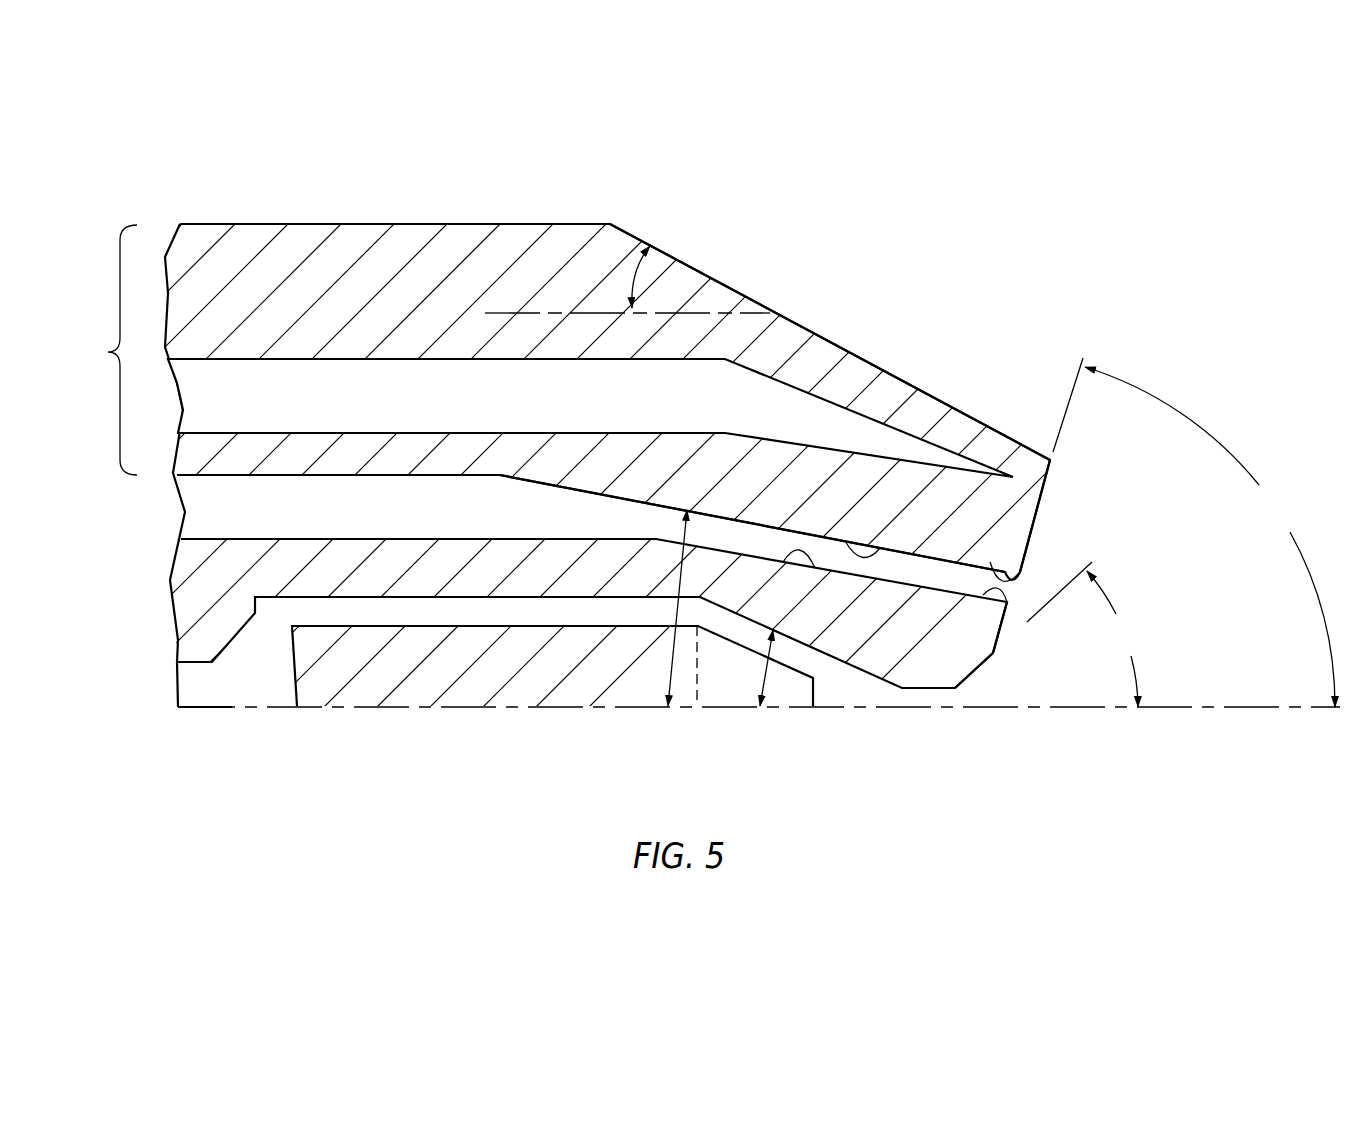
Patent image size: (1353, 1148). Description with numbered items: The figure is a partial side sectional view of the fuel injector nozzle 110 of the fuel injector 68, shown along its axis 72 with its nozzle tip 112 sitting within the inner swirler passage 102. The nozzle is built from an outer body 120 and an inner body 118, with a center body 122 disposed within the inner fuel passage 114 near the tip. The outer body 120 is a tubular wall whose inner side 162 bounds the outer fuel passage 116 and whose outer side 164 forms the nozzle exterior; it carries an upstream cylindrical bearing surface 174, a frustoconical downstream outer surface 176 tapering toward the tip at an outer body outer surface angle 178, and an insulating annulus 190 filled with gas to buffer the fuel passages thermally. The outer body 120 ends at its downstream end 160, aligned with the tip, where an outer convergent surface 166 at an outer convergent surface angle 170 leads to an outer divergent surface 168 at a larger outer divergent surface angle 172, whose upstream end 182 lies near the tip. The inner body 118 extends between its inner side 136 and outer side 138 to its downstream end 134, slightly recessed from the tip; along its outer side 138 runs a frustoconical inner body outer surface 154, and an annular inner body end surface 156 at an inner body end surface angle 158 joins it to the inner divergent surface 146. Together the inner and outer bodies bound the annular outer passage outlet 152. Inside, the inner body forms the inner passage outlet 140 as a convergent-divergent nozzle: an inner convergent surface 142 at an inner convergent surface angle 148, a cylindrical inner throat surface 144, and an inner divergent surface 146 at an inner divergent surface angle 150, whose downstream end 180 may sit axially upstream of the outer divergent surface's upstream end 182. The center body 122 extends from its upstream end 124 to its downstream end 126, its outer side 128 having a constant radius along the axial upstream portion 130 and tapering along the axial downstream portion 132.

The fuel injector 68 is at (676, 424).
The fuel injector nozzle 110 is at (895, 247).
The bearing surface 174 is at (358, 224).
The outer side of the outer body 164 is at (440, 222).
The outer body outer surface angle 178 is at (632, 308).
The downstream outer surface 176 is at (810, 331).
The outer body 120 is at (96, 350).
The insulating annulus 190 is at (396, 401).
The inner swirler passage 102 is at (676, 424).
The nozzle tip 112 is at (1112, 516).
The outer body downstream end 160 is at (1057, 461).
The inner body end surface angle 158 is at (1194, 532).
The outer divergent surface angle 172 is at (1194, 532).
The outer passage outlet 152 is at (1053, 542).
The outer divergent surface 168 is at (1025, 558).
The upstream end of the outer divergent surface 182 is at (990, 562).
The outer convergent surface 166 is at (845, 541).
The inner side of the outer body 162 is at (418, 483).
The outer side of the inner body 138 is at (238, 531).
The outer fuel passage 116 is at (206, 503).
The inner body 118 is at (182, 578).
The inner fuel passage 114 is at (204, 684).
The outer convergent surface angle 170 is at (668, 610).
The inner body outer surface 154 is at (815, 568).
The inner body downstream end 134 is at (983, 595).
The inner body end surface 156 is at (1008, 625).
The inner divergent surface angle 150 is at (1085, 634).
The inner side of the inner body 136 is at (273, 604).
The outer side of the center body 128 is at (343, 625).
The axial upstream portion of the center body 130 is at (546, 680).
The axial downstream portion of the center body 132 is at (751, 682).
The upstream end of the center body 124 is at (297, 706).
The center body 122 is at (384, 708).
The inner convergent surface angle 148 is at (773, 665).
The downstream end of the center body 126 is at (837, 707).
The inner convergent surface 142 is at (867, 677).
The inner throat surface 144 is at (930, 690).
The inner divergent surface 146 is at (972, 673).
The downstream end of the inner divergent surface 180 is at (998, 657).
The inner passage outlet 140 is at (1024, 692).
The axis 72 is at (1315, 710).